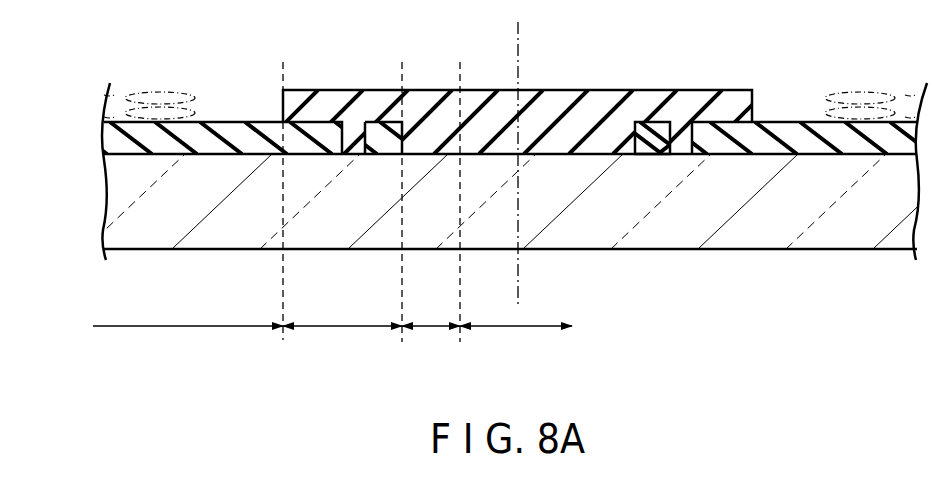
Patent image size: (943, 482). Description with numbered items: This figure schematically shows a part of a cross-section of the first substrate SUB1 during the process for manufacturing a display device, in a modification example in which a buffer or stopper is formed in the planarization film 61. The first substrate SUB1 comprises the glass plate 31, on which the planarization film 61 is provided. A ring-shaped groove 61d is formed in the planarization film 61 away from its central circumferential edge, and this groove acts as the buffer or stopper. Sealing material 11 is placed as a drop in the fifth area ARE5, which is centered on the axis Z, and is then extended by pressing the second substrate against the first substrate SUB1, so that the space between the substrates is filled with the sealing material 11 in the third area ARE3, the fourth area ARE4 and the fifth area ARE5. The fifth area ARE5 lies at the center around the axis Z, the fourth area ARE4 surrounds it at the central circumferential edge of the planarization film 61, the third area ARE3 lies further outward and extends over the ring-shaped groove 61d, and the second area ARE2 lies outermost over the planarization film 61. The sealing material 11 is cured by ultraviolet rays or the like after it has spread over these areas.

The sealing material 11 is at (600, 145).
The glass plate 31 is at (838, 235).
The planarization film 61 is at (808, 133).
The ring-shaped groove 61d is at (682, 148).
The first substrate SUB1 is at (89, 122).
The Z axis Z is at (518, 153).
The second area ARE2 is at (188, 341).
The third area ARE3 is at (342, 341).
The fourth area ARE4 is at (431, 328).
The fifth area ARE5 is at (516, 355).